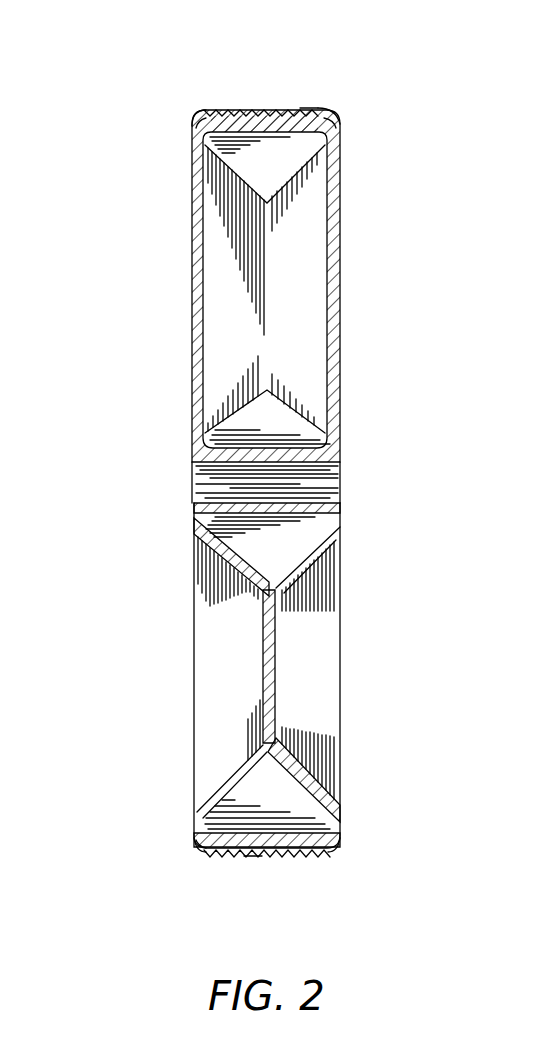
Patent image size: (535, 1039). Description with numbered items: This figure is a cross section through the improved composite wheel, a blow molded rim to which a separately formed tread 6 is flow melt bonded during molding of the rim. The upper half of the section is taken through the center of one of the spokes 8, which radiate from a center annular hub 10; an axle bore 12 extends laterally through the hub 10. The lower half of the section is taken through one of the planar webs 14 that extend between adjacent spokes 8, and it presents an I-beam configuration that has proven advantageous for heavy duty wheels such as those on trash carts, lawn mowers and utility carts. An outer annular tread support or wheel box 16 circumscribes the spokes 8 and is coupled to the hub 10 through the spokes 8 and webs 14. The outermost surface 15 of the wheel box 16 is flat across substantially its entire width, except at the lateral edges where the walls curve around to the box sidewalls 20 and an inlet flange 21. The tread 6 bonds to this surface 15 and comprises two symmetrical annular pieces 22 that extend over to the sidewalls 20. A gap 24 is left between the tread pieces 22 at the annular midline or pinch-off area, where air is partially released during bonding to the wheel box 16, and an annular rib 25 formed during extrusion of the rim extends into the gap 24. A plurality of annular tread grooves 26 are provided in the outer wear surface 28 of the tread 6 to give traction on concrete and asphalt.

The tread 6 is at (330, 110).
The spokes 8 is at (340, 320).
The annular hub 10 is at (340, 535).
The axle bore 12 is at (253, 480).
The planar webs 14 is at (275, 672).
The outermost surface 15 is at (208, 118).
The wheel box 16 is at (340, 820).
The box sidewalls 20 is at (190, 133).
The inlet flange 21 is at (345, 133).
The annular tread pieces 22 is at (195, 850).
The gap 24 is at (278, 118).
The annular rib 25 is at (268, 855).
The tread grooves 26 is at (217, 108).
The wear surface 28 is at (310, 110).